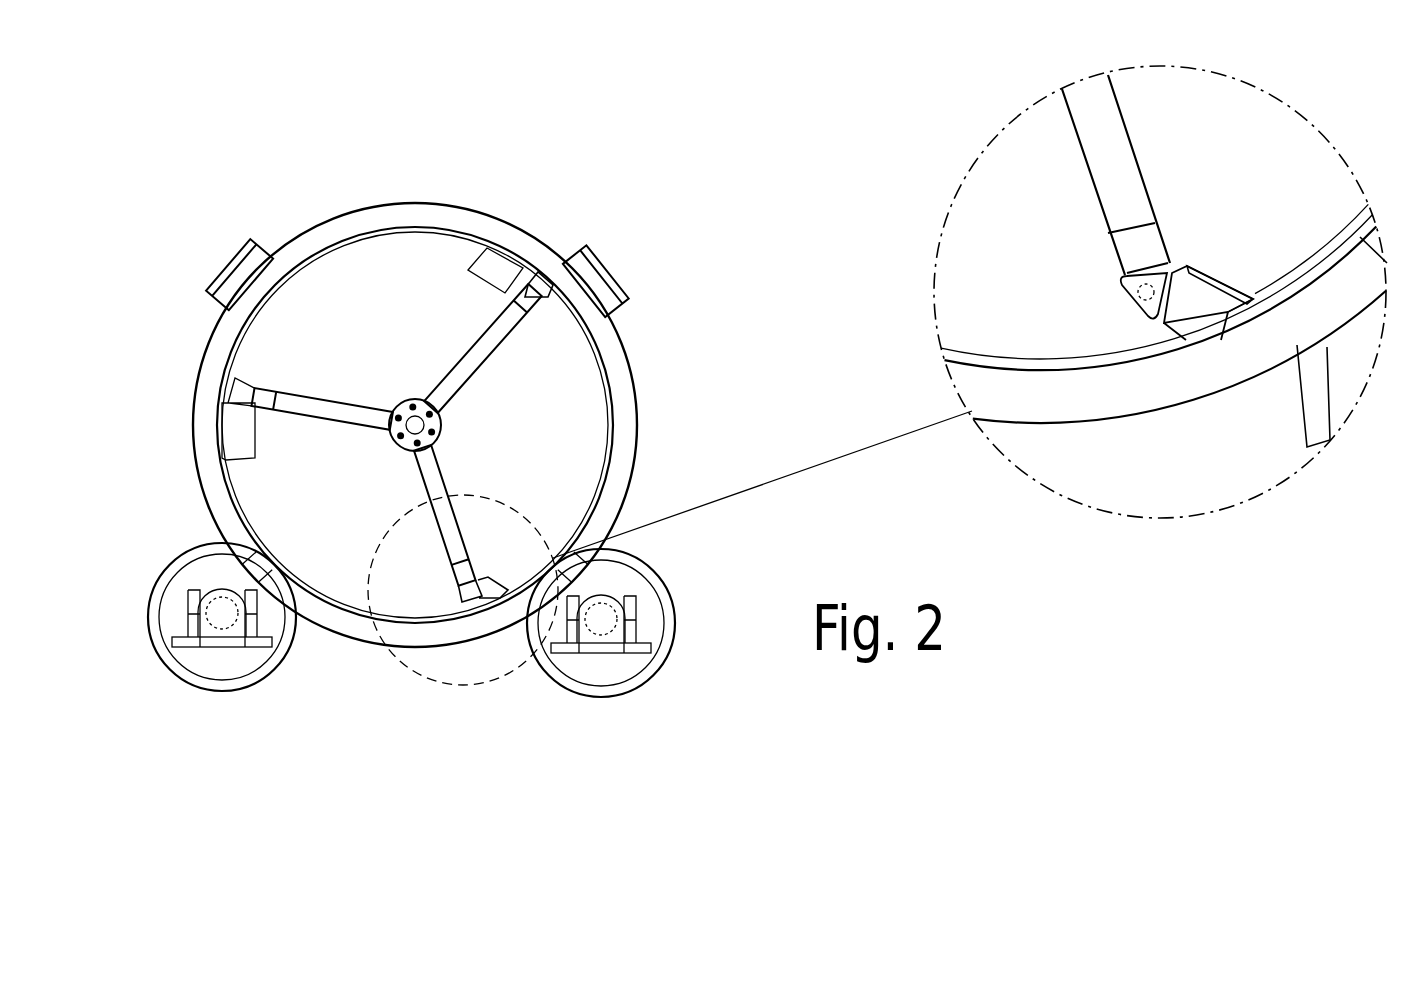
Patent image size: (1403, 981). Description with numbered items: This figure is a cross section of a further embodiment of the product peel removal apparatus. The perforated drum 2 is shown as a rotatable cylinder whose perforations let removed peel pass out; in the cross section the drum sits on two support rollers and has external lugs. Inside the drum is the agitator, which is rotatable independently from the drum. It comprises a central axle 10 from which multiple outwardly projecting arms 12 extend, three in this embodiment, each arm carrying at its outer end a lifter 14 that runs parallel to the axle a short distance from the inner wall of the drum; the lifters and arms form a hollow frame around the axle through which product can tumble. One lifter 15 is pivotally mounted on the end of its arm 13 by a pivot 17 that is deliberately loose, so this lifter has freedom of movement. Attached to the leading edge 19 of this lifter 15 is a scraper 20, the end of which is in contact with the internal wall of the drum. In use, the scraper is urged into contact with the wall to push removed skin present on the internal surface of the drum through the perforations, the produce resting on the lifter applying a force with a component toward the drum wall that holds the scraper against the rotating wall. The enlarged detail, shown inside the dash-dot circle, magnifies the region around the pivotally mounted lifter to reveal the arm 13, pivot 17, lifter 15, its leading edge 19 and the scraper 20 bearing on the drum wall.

The perforated drum 2 is at (598, 372).
The central axle 10 is at (442, 422).
The arms 12 is at (457, 380).
The arm 13 is at (1117, 177).
The lifters 14 is at (536, 288).
The lifter 15 is at (1188, 302).
The pivot 17 is at (1113, 304).
The leading edge 19 is at (1215, 283).
The scraper 20 is at (1240, 280).